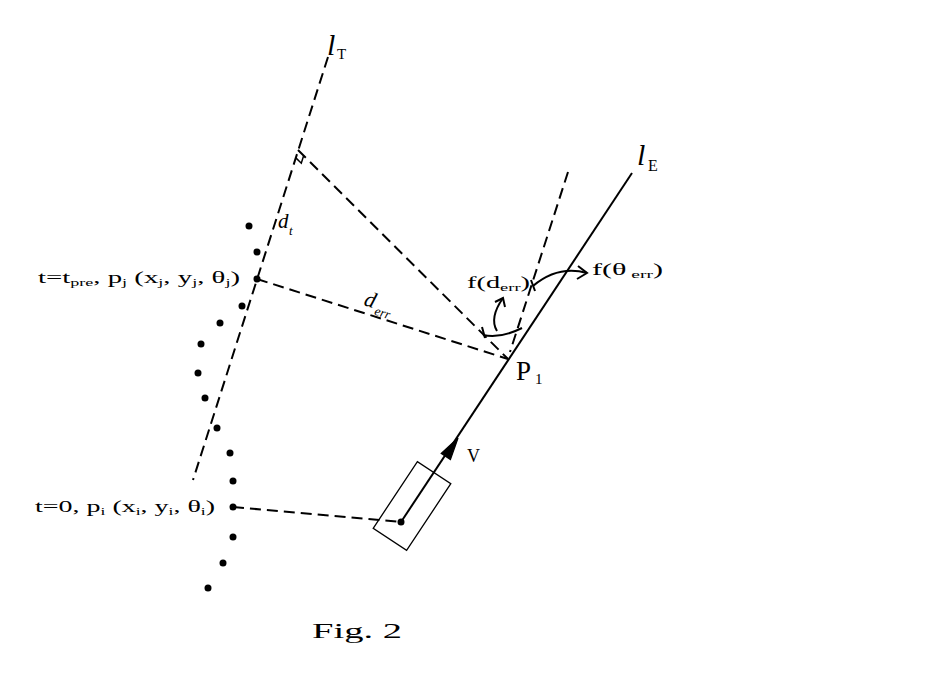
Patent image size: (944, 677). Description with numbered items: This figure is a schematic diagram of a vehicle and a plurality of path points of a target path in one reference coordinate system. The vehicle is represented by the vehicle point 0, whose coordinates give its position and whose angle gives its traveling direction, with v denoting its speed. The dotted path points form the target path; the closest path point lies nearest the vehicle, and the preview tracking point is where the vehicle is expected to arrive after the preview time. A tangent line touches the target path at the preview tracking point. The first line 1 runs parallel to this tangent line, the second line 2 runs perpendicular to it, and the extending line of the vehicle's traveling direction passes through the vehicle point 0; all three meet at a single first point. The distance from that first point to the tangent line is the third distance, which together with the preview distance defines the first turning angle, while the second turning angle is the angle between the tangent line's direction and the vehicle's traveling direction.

The first line 1 is at (547, 244).
The second line 2 is at (402, 268).
The vehicle point 0 is at (475, 507).